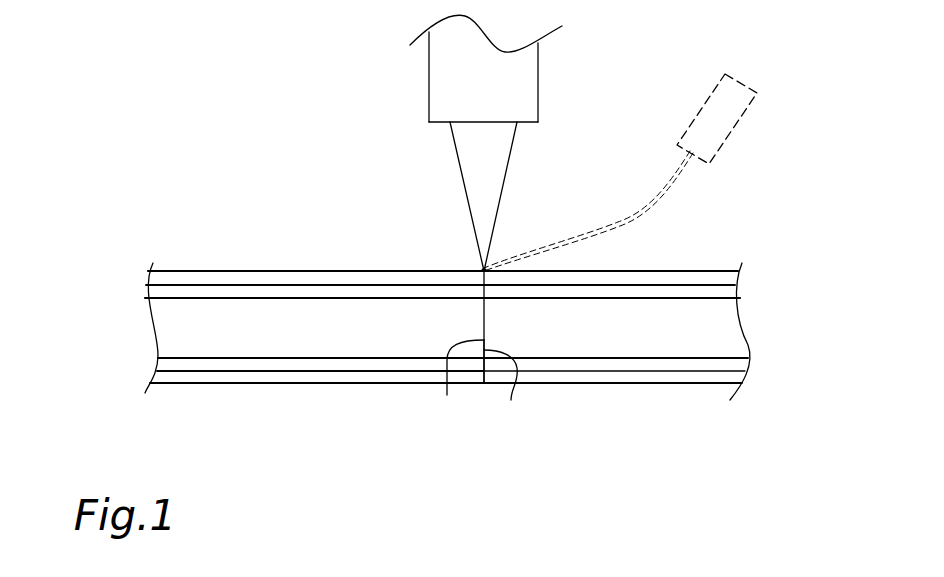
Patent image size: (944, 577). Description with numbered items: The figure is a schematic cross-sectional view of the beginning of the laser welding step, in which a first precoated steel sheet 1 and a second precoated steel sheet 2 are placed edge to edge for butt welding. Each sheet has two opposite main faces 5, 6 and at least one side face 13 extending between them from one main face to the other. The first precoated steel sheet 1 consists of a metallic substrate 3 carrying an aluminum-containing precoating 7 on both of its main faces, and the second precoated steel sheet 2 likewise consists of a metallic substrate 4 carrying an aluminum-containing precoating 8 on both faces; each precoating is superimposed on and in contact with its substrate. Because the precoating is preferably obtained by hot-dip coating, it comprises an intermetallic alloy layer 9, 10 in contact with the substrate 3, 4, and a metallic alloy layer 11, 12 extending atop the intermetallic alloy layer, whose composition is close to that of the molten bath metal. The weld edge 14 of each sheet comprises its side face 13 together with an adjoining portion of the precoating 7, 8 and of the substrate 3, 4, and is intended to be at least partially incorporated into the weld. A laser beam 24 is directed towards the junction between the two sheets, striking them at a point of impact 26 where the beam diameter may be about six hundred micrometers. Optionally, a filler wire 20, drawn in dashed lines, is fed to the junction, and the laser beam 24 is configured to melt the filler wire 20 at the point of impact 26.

The first precoated steel sheet 1 is at (305, 397).
The second precoated steel sheet 2 is at (608, 409).
The metallic substrate 3 is at (190, 338).
The metallic substrate 4 is at (731, 342).
The main face 5 is at (260, 262).
The main face 6 is at (679, 262).
The aluminum-containing precoating 7 is at (63, 262).
The aluminum-containing precoating 8 is at (752, 268).
The intermetallic alloy layer 9 is at (172, 296).
The intermetallic alloy layer 10 is at (707, 290).
The metallic alloy layer 11 is at (155, 278).
The metallic alloy layer 12 is at (718, 279).
The side face 13 is at (447, 395).
The weld edge 14 is at (477, 395).
The filler wire 20 is at (621, 223).
The laser beam 24 is at (471, 187).
The point of impact 26 is at (484, 270).